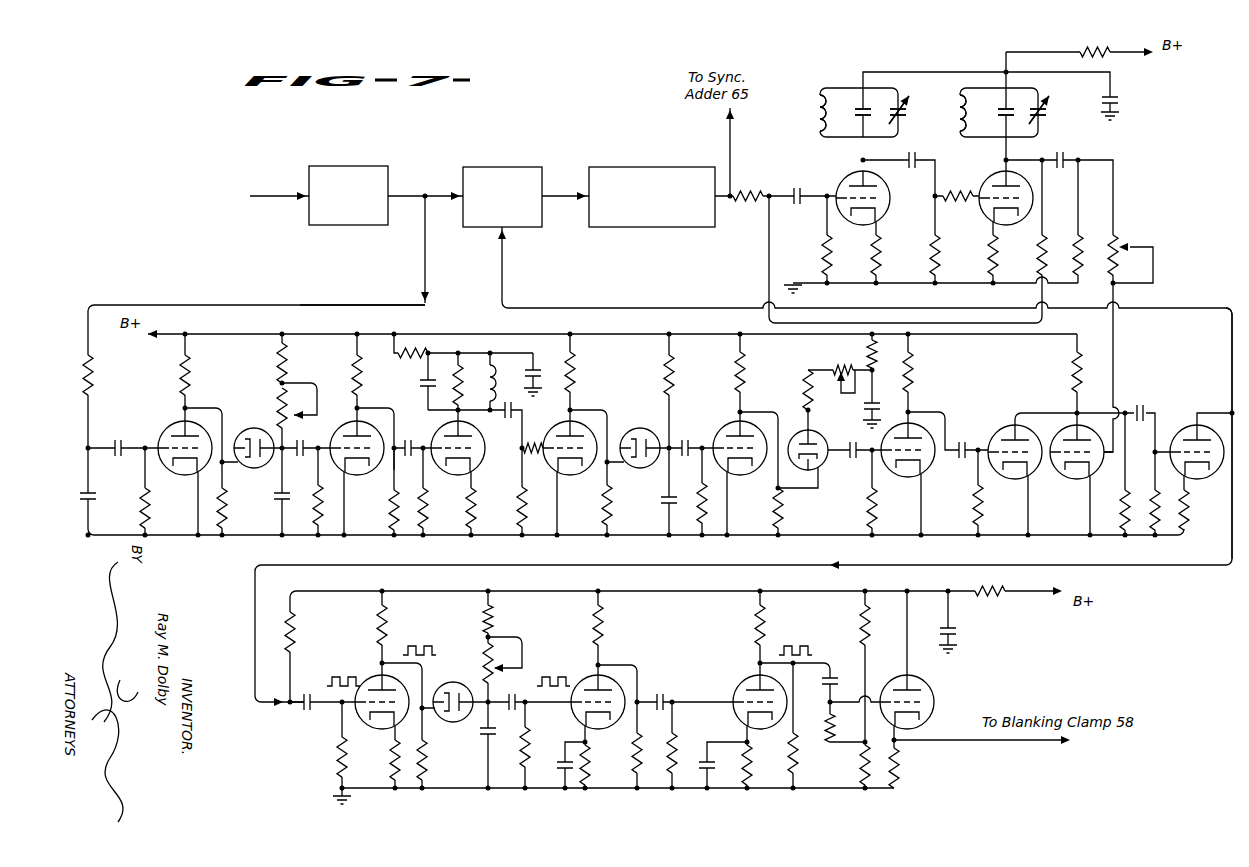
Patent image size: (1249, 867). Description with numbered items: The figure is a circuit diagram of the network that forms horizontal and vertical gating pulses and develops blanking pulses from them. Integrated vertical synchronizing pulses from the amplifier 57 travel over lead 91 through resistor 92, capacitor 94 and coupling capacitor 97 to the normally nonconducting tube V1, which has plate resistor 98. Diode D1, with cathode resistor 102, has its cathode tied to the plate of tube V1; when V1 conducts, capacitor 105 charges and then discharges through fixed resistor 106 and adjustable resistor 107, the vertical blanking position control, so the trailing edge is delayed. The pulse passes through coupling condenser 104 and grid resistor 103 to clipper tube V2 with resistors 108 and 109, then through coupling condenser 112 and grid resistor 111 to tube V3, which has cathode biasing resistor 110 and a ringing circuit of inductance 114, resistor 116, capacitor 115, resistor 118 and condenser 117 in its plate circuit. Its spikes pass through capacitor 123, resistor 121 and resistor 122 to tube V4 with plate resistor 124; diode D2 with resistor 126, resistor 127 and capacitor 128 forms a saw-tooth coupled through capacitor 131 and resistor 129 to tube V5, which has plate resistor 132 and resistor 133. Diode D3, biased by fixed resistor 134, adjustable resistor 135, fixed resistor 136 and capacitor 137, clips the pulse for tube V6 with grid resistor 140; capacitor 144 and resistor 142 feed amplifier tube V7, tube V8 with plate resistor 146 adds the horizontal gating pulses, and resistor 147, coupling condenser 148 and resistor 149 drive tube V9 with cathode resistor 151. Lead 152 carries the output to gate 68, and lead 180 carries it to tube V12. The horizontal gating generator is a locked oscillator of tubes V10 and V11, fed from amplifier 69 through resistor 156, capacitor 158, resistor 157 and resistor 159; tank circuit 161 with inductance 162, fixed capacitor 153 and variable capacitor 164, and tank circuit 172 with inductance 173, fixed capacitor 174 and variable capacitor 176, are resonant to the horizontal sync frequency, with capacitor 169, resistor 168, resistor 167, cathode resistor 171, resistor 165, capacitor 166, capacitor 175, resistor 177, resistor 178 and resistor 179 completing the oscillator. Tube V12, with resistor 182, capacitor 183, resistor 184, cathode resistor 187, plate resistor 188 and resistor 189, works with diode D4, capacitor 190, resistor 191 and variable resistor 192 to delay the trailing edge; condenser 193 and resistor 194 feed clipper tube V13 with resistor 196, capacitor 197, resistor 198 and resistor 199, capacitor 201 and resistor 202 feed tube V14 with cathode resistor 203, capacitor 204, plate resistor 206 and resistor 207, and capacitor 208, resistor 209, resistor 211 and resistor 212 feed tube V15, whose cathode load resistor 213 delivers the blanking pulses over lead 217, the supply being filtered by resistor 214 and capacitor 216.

The amplifier 57 is at (368, 168).
The gate 68 is at (523, 168).
The amplifier 69 is at (630, 167).
The lead 91 is at (343, 307).
The resistor 92 is at (80, 364).
The capacitor 94 is at (80, 496).
The coupling capacitor 97 is at (122, 442).
The plate resistor 98 is at (180, 376).
The cathode resistor 102 is at (228, 513).
The grid resistor 103 is at (316, 528).
The coupling condenser 104 is at (302, 456).
The capacitor 105 is at (280, 498).
The fixed resistor 106 is at (278, 360).
The adjustable resistor 107 is at (280, 400).
The grid resistor 108 is at (356, 356).
The resistor 109 is at (392, 510).
The cathode biasing resistor 110 is at (460, 510).
The grid resistor 111 is at (426, 490).
The coupling condenser 112 is at (394, 470).
The inductance 114 is at (496, 358).
The capacitor 115 is at (420, 383).
The resistor 116 is at (454, 396).
The condenser 117 is at (539, 354).
The resistor 118 is at (420, 348).
The resistor 121 is at (531, 455).
The resistor 122 is at (520, 500).
The capacitor 123 is at (506, 418).
The plate resistor 124 is at (576, 358).
The resistor 126 is at (604, 504).
The resistor 127 is at (666, 384).
The capacitor 128 is at (666, 506).
The resistor 129 is at (700, 528).
The capacitor 131 is at (690, 416).
The plate resistor 132 is at (736, 376).
The resistor 133 is at (784, 512).
The fixed resistor 134 is at (806, 390).
The adjustable resistor 135 is at (840, 364).
The fixed resistor 136 is at (886, 349).
The capacitor 137 is at (890, 406).
The grid resistor 140 is at (912, 377).
The resistor 142 is at (972, 506).
The capacitor 144 is at (961, 446).
The plate resistor 146 is at (1072, 377).
The resistor 147 is at (1124, 530).
The coupling condenser 148 is at (1141, 410).
The resistor 149 is at (1154, 530).
The cathode resistor 151 is at (1188, 502).
The lead 152 is at (678, 306).
The fixed capacitor 153 is at (856, 120).
The resistor 156 is at (748, 204).
The resistor 157 is at (822, 252).
The capacitor 158 is at (798, 186).
The resistor 159 is at (879, 259).
The tank circuit 161 is at (846, 86).
The inductance 162 is at (820, 126).
The variable capacitor 164 is at (903, 115).
The resistor 165 is at (1078, 51).
The capacitor 166 is at (1121, 100).
The resistor 167 is at (957, 191).
The resistor 168 is at (932, 251).
The capacitor 169 is at (917, 158).
The cathode resistor 171 is at (990, 251).
The tank circuit 172 is at (969, 80).
The inductance 173 is at (960, 106).
The fixed capacitor 174 is at (1000, 120).
The capacitor 175 is at (1070, 146).
The variable capacitor 176 is at (1043, 117).
The resistor 177 is at (1074, 238).
The resistor 178 is at (1122, 238).
The resistor 179 is at (1020, 280).
The lead 180 is at (1206, 306).
The resistor 182 is at (298, 626).
The capacitor 183 is at (304, 712).
The resistor 184 is at (336, 752).
The cathode resistor 187 is at (392, 786).
The plate resistor 188 is at (390, 620).
The resistor 189 is at (424, 786).
The capacitor 190 is at (484, 736).
The resistor 191 is at (492, 610).
The variable resistor 192 is at (484, 654).
The condenser 193 is at (510, 708).
The resistor 194 is at (524, 784).
The resistor 196 is at (585, 786).
The capacitor 197 is at (565, 784).
The resistor 198 is at (637, 786).
The resistor 199 is at (605, 620).
The capacitor 201 is at (656, 708).
The resistor 202 is at (678, 738).
The cathode resistor 203 is at (747, 786).
The capacitor 204 is at (706, 784).
The plate resistor 206 is at (767, 616).
The resistor 207 is at (793, 784).
The capacitor 208 is at (834, 676).
The resistor 209 is at (829, 734).
The resistor 211 is at (862, 626).
The resistor 212 is at (860, 769).
The resistor 213 is at (902, 766).
The resistor 214 is at (998, 596).
The capacitor 216 is at (958, 631).
The lead 217 is at (1023, 742).
The vacuum tube V1 is at (173, 435).
The vacuum tube V2 is at (354, 436).
The vacuum tube V3 is at (443, 437).
The vacuum tube V4 is at (563, 436).
The vacuum tube V5 is at (734, 436).
The vacuum tube V6 is at (923, 466).
The vacuum tube V7 is at (1023, 477).
The vacuum tube V8 is at (1078, 477).
The vacuum tube V9 is at (1194, 436).
The vacuum tube V10 is at (889, 201).
The vacuum tube V11 is at (983, 210).
The vacuum tube V12 is at (376, 678).
The vacuum tube V13 is at (571, 718).
The vacuum tube V14 is at (750, 678).
The vacuum tube V15 is at (932, 693).
The diode D1 is at (259, 440).
The diode D2 is at (646, 442).
The diode D3 is at (822, 462).
The diode D4 is at (469, 684).